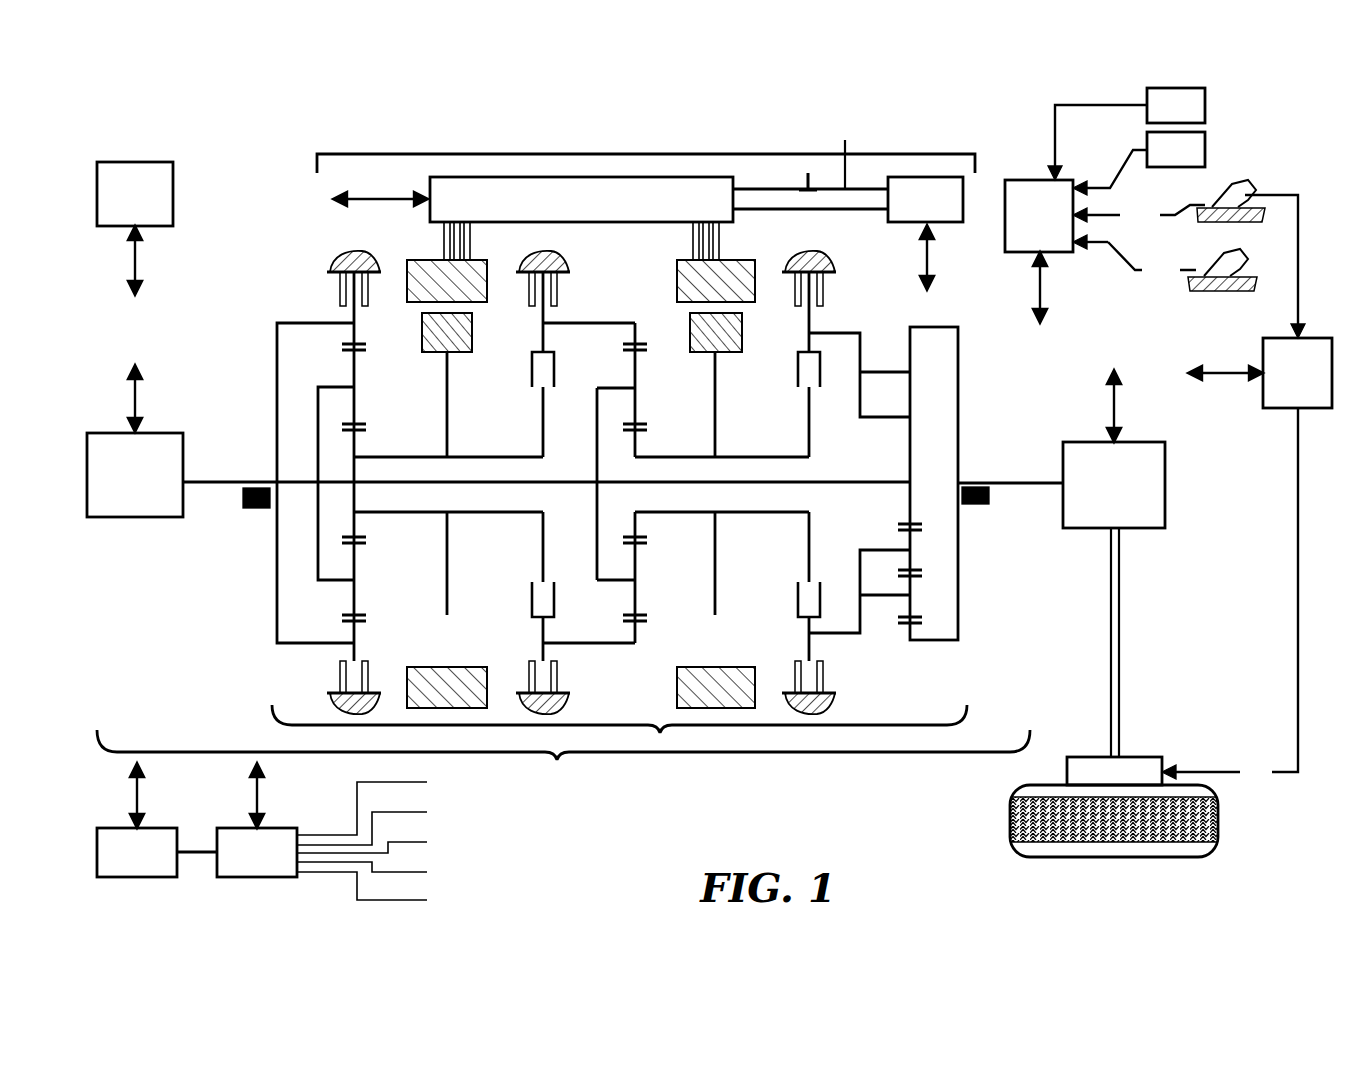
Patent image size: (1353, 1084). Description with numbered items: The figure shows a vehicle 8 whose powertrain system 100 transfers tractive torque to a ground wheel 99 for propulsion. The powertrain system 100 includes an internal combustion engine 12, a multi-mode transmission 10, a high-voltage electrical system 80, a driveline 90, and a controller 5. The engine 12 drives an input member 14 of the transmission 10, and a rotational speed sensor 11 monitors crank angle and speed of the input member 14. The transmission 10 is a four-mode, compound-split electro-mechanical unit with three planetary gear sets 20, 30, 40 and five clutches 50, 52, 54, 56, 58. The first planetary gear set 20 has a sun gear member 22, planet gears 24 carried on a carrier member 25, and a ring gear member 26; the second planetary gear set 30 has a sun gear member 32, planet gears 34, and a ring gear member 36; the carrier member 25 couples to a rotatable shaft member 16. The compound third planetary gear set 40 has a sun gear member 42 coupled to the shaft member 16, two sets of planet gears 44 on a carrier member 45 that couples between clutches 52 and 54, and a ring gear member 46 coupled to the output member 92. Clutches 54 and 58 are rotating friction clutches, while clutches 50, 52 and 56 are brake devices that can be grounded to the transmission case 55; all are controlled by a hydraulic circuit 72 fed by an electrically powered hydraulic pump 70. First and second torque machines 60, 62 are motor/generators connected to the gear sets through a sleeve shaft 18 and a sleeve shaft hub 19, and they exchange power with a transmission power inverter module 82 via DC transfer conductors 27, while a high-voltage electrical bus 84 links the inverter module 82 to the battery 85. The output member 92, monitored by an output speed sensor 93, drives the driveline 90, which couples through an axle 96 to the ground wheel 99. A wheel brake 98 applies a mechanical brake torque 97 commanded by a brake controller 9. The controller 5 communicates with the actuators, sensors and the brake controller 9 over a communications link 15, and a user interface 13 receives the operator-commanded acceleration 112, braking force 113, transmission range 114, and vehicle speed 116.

The controller 5 is at (135, 194).
The vehicle 8 is at (775, 132).
The brake controller 9 is at (1297, 373).
The multi-mode transmission 10 is at (660, 733).
The rotational speed sensor 11 is at (253, 510).
The internal combustion engine 12 is at (135, 475).
The user interface 13 is at (1039, 216).
The input member 14 is at (222, 484).
The communications link 15 is at (685, 501).
The rotatable shaft member 16 is at (553, 478).
The sleeve shaft 18 is at (489, 456).
The sleeve shaft hub 19 is at (762, 456).
The first planetary gear set 20 is at (370, 528).
The sun gear member 22 is at (357, 436).
The planet gears 24 is at (357, 389).
The carrier member 25 is at (322, 455).
The ring gear member 26 is at (361, 347).
The DC transfer conductors 27 is at (471, 237).
The second planetary gear set 30 is at (646, 573).
The sun gear member 32 is at (640, 432).
The planet gears 34 is at (637, 388).
The ring gear member 36 is at (637, 345).
The third planetary gear set 40 is at (890, 468).
The sun gear member 42 is at (915, 522).
The planet gears 44 is at (915, 550).
The carrier member 45 is at (863, 340).
The ring gear member 46 is at (905, 628).
The clutch C5 50 is at (340, 291).
The clutch C1 52 is at (825, 296).
The clutch C2 54 is at (797, 375).
The transmission case 55 is at (336, 261).
The clutch C3 56 is at (560, 287).
The clutch C4 58 is at (530, 375).
The first torque machine 60 is at (470, 308).
The second torque machine 62 is at (738, 310).
The hydraulic pump 70 is at (137, 852).
The hydraulic circuit 72 is at (237, 852).
The high-voltage electrical system 80 is at (657, 152).
The TPIM 82 is at (581, 199).
The high-voltage electrical bus 84 is at (845, 142).
The battery 85 is at (848, 197).
The driveline 90 is at (1114, 485).
The output member 92 is at (1012, 478).
The transmission output speed sensor 93 is at (992, 496).
The axle 96 is at (1121, 600).
The mechanical brake torque 97 is at (1230, 595).
The wheel brake 98 is at (1165, 758).
The ground wheel 99 is at (1218, 812).
The powertrain system 100 is at (557, 760).
The operator-commanded acceleration 112 is at (1165, 263).
The operator-commanded braking force 113 is at (1189, 259).
The operator-commanded transmission range 114 is at (1139, 163).
The operator-commanded vehicle speed 116 is at (1126, 134).